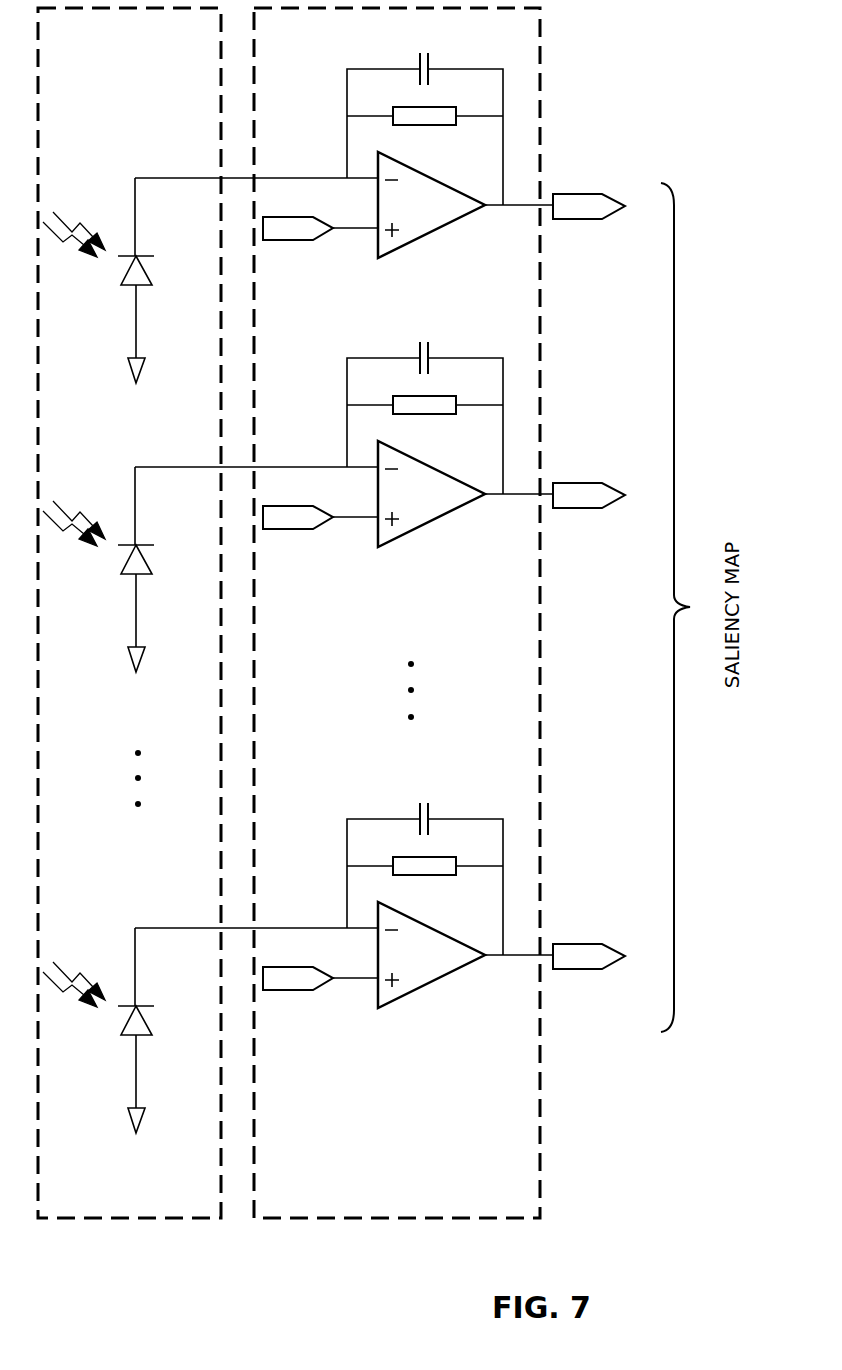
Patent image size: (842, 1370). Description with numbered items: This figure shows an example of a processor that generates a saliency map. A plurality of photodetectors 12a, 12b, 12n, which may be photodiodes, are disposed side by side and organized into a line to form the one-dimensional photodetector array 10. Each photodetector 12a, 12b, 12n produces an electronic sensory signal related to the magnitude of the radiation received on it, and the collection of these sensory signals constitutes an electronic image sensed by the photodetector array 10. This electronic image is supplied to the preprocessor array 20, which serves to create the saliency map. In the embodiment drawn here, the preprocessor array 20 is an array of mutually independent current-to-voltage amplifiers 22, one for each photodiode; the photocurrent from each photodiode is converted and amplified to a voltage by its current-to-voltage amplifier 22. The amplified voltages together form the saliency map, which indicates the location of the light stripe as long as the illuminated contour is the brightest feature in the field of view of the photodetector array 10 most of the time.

The 1D photodetector array 10 is at (130, 1220).
The preprocessor array 20 is at (447, 1220).
The photodetector 12a is at (150, 274).
The photodetector 12b is at (131, 569).
The photodetector 12n is at (130, 1030).
The current-to-voltage amplifier 22 is at (380, 8).